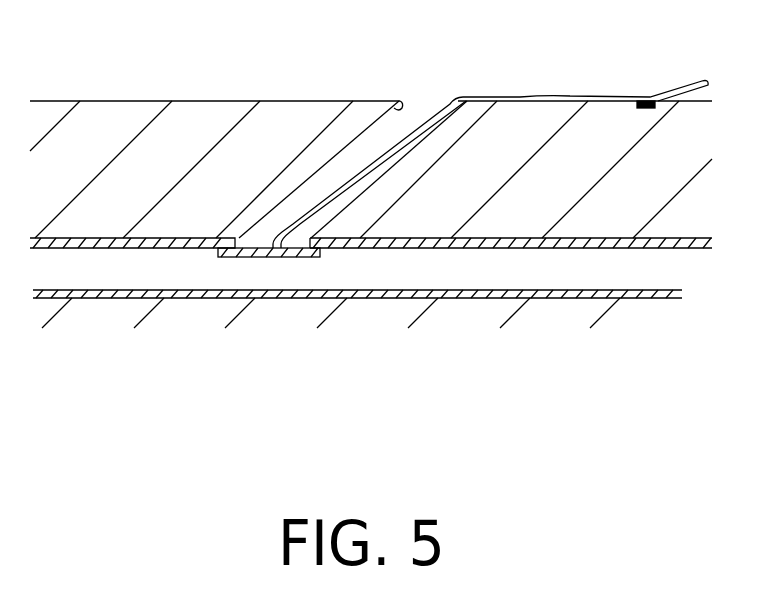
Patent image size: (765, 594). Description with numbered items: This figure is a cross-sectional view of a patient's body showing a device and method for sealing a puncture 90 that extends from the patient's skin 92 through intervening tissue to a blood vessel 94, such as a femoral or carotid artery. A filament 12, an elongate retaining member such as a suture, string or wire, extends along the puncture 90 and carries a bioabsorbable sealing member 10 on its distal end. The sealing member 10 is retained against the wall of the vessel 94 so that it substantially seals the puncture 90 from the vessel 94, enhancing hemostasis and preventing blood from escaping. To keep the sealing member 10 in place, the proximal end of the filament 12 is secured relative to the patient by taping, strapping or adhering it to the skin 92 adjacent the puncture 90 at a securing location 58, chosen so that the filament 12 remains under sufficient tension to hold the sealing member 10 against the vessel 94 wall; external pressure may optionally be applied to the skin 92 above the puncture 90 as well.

The skin 92 is at (200, 100).
The puncture 90 is at (400, 103).
The filament 12 is at (542, 98).
The securing location 58 is at (653, 100).
The sealing member 10 is at (293, 258).
The blood vessel 94 is at (558, 298).